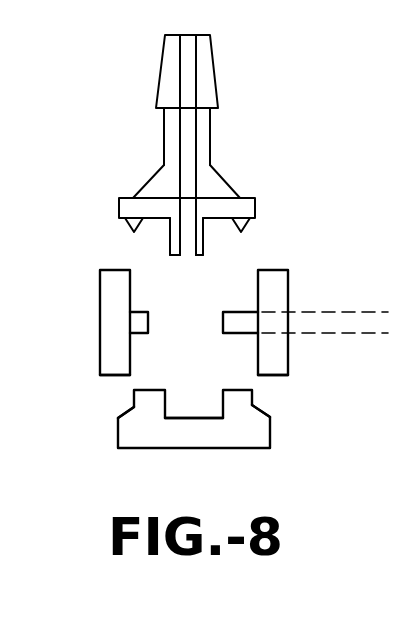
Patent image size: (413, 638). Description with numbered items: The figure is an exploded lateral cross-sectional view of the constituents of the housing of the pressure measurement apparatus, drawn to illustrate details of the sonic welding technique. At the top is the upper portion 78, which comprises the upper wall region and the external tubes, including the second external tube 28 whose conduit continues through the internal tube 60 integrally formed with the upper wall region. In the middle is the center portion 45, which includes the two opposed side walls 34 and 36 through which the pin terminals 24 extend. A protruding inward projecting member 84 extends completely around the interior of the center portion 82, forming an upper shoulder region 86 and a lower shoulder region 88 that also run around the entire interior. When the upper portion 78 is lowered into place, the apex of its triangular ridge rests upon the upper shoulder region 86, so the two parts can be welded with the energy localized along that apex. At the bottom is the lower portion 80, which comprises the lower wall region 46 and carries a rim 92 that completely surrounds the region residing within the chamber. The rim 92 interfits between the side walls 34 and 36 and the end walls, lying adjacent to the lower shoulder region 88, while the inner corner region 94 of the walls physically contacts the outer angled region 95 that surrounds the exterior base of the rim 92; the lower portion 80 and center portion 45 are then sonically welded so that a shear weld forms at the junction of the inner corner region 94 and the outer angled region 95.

The pin terminals 24 is at (318, 310).
The second external tube 28 is at (210, 155).
The side wall 34 is at (134, 358).
The side wall 36 is at (257, 365).
The center portion 45 is at (86, 327).
The lower wall region 46 is at (197, 418).
The internal tube 60 is at (203, 236).
The upper portion 78 is at (178, 212).
The lower portion 80 is at (199, 428).
The center portion 82 is at (214, 312).
The inward projecting member 84 is at (223, 322).
The upper shoulder region 86 is at (247, 310).
The lower shoulder region 88 is at (247, 336).
The rim 92 is at (130, 227).
The inner corner region 94 is at (259, 376).
The outer angled region 95 is at (126, 414).